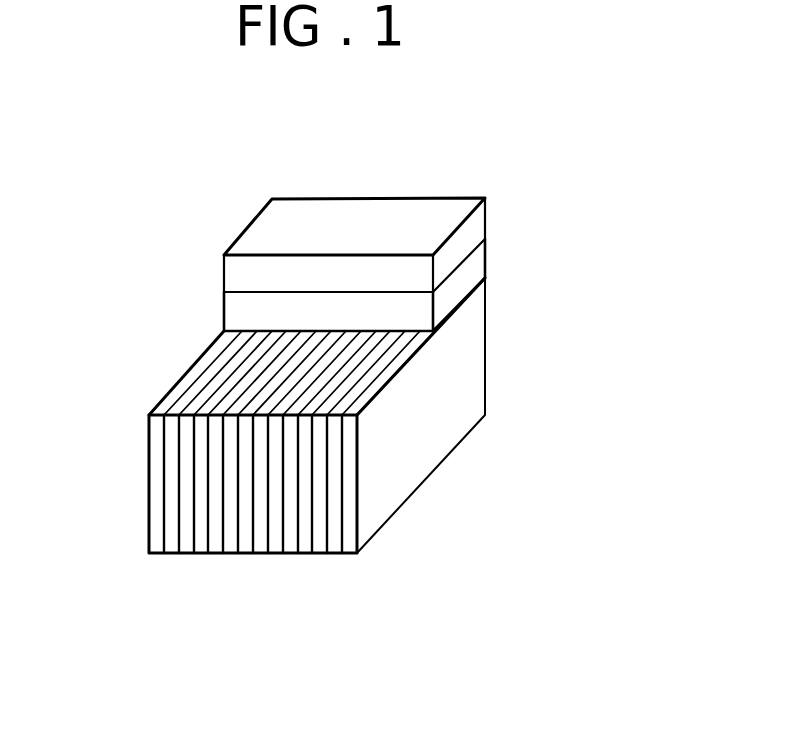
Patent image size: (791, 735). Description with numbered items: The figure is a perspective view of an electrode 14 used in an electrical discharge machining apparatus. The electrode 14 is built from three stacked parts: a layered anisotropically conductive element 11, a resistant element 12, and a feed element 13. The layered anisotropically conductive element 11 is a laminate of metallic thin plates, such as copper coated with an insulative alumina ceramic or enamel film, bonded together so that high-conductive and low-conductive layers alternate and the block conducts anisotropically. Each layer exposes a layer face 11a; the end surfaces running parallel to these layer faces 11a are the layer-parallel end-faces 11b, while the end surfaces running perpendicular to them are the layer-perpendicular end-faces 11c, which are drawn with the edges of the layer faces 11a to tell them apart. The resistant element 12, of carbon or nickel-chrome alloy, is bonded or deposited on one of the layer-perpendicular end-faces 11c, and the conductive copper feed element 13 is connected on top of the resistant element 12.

The layered anisotropically conductive element 11 is at (317, 453).
The layer face 11a is at (302, 532).
The layer-parallel end-face 11b is at (413, 465).
The layer-perpendicular end-face 11c is at (223, 378).
The resistant element 12 is at (478, 263).
The feed element 13 is at (478, 228).
The electrode 14 is at (354, 403).